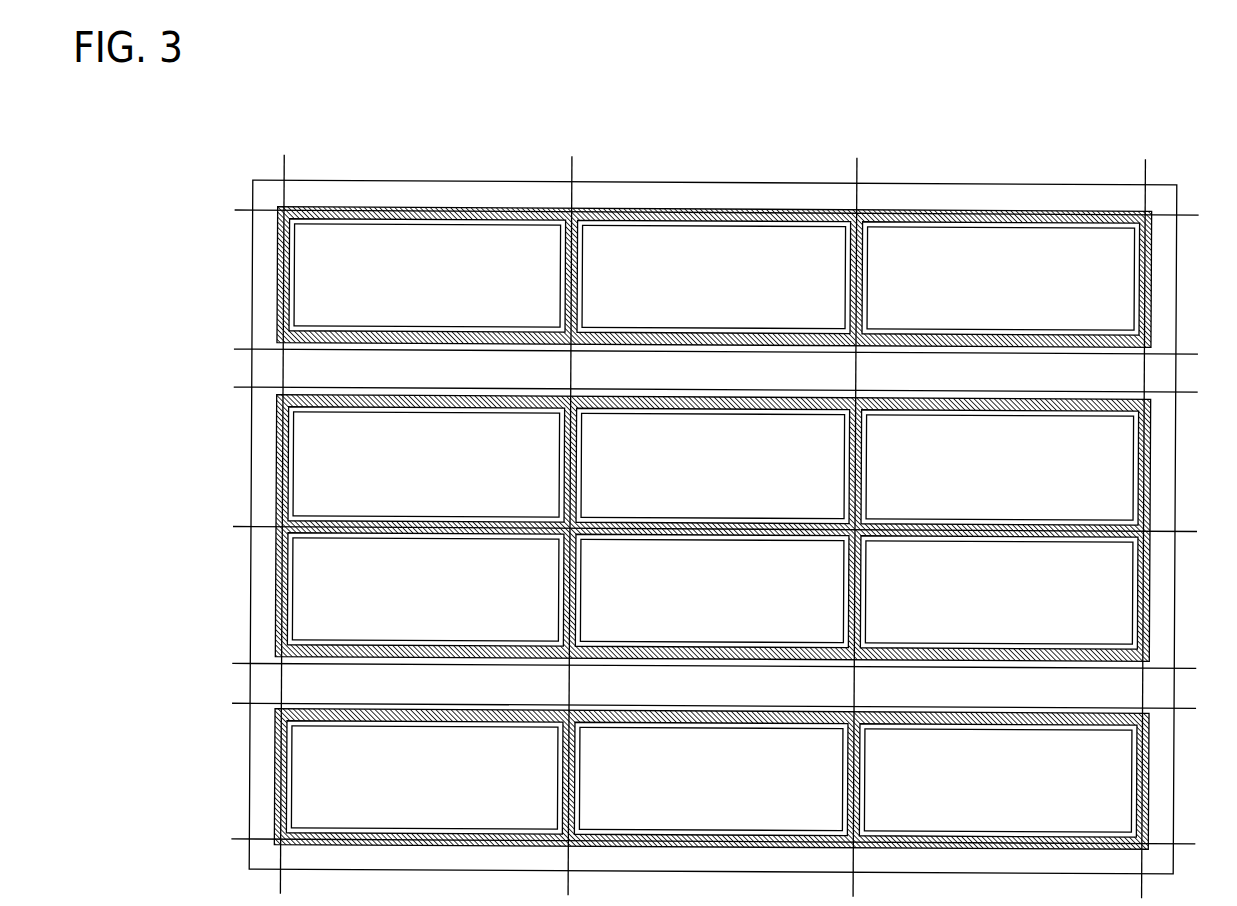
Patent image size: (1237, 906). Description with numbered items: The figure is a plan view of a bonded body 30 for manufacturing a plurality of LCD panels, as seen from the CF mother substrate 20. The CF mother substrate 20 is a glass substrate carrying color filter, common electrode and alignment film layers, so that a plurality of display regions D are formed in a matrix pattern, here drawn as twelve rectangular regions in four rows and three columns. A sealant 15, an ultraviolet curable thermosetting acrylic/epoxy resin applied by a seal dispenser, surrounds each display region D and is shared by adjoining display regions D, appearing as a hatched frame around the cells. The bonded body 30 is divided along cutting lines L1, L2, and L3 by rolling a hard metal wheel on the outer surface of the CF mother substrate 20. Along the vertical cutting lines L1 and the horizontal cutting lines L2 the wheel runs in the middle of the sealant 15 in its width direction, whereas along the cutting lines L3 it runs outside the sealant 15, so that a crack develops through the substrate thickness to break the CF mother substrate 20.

The bonded body 30 is at (330, 140).
The CF mother substrate 20 is at (1163, 252).
The sealant 15 is at (1150, 300).
The cutting line L1 is at (717, 510).
The cutting line L2 is at (729, 527).
The cutting line L3 is at (729, 529).
The display region D is at (712, 528).